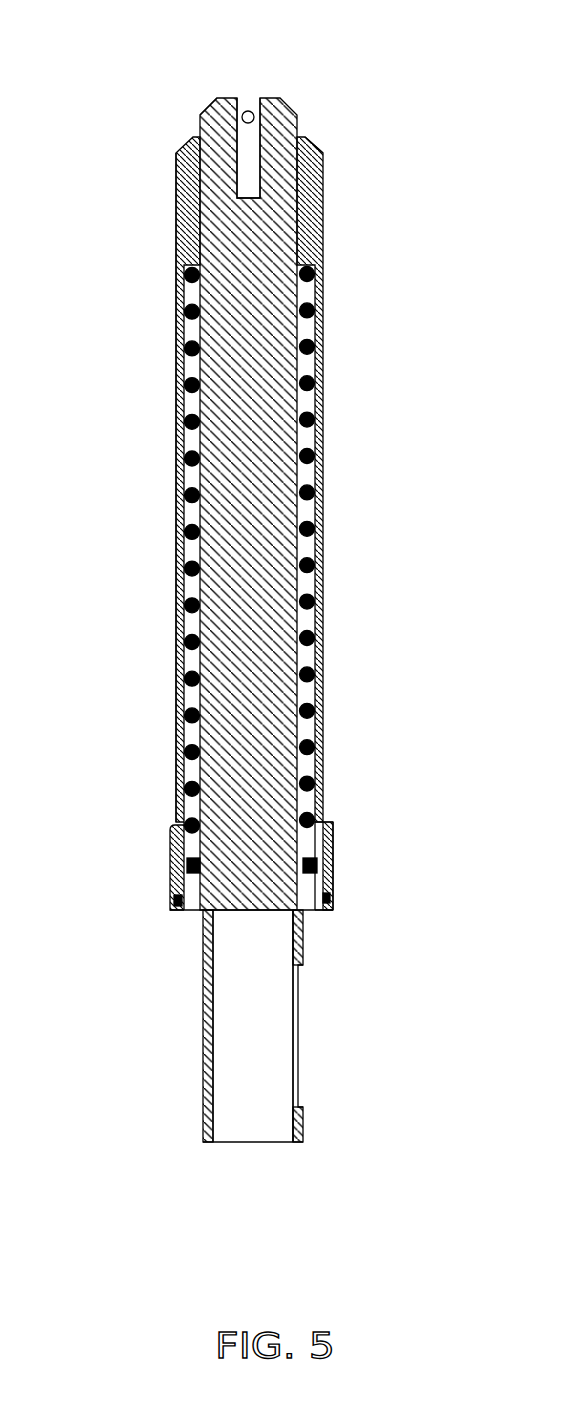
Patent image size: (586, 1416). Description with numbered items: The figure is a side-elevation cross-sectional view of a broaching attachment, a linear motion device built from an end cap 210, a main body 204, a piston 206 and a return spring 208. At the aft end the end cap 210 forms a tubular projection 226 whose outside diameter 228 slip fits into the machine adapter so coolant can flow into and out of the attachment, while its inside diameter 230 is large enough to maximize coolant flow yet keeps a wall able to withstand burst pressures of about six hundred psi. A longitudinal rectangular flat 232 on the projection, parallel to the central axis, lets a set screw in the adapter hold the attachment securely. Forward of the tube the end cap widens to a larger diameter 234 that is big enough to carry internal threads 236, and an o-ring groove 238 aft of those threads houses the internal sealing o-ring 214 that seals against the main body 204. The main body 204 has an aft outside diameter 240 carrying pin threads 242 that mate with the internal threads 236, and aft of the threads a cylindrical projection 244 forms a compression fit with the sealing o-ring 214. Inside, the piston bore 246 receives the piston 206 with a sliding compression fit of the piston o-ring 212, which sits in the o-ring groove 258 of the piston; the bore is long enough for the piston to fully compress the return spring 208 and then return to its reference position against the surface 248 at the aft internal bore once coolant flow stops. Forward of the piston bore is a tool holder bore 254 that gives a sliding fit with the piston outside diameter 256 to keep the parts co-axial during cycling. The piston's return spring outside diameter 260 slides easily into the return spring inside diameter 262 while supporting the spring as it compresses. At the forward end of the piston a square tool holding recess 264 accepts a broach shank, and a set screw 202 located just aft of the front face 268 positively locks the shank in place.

The set screw 202 is at (254, 116).
The main body 204 is at (323, 212).
The piston 206 is at (310, 337).
The return spring 208 is at (315, 568).
The end cap 210 is at (335, 842).
The piston o-ring 212 is at (320, 867).
The internal sealing o-ring 214 is at (328, 906).
The tubular projection 226 is at (267, 1142).
The outside diameter 228 is at (302, 1138).
The inside diameter 230 is at (212, 1115).
The longitudinal rectangular flat 232 is at (298, 1103).
The larger diameter 234 is at (333, 852).
The internal threads 236 is at (327, 895).
The o-ring groove 238 is at (320, 909).
The outside diameter 240 is at (317, 682).
The pin threads 242 is at (333, 823).
The cylindrical projection 244 is at (313, 909).
The piston bore 246 is at (317, 513).
The surface 248 is at (308, 909).
The tool holder bore 254 is at (317, 172).
The outside diameter 256 is at (198, 127).
The o-ring groove 258 is at (180, 904).
The return spring outside diameter 260 is at (315, 417).
The inside diameter 262 is at (317, 302).
The square tool holding recess 264 is at (248, 111).
The front face 268 is at (227, 99).